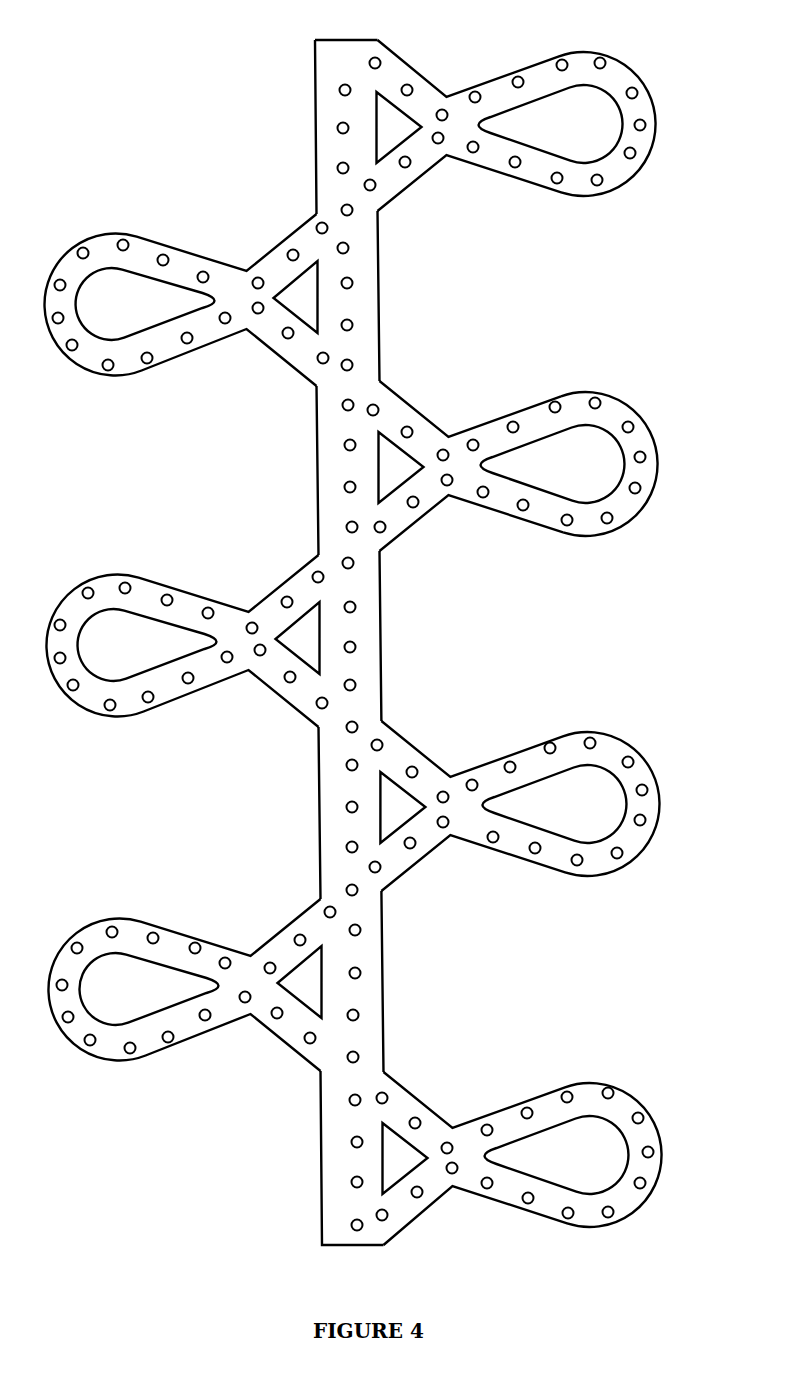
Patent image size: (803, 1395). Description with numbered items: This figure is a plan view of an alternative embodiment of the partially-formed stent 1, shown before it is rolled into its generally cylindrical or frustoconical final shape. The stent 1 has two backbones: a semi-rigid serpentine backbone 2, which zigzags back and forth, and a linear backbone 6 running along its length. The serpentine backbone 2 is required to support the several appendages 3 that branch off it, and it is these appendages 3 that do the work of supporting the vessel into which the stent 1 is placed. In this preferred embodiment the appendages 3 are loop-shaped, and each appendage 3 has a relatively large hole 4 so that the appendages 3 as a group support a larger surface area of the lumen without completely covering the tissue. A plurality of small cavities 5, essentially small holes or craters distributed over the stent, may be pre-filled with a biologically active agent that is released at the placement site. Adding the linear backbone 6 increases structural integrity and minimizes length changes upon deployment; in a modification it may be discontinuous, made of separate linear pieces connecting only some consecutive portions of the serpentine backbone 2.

The stent 1 is at (563, 268).
The serpentine backbone 2 is at (420, 163).
The appendages 3 is at (603, 400).
The hole 4 is at (563, 475).
The cavities 5 is at (415, 420).
The linear backbone 6 is at (347, 50).